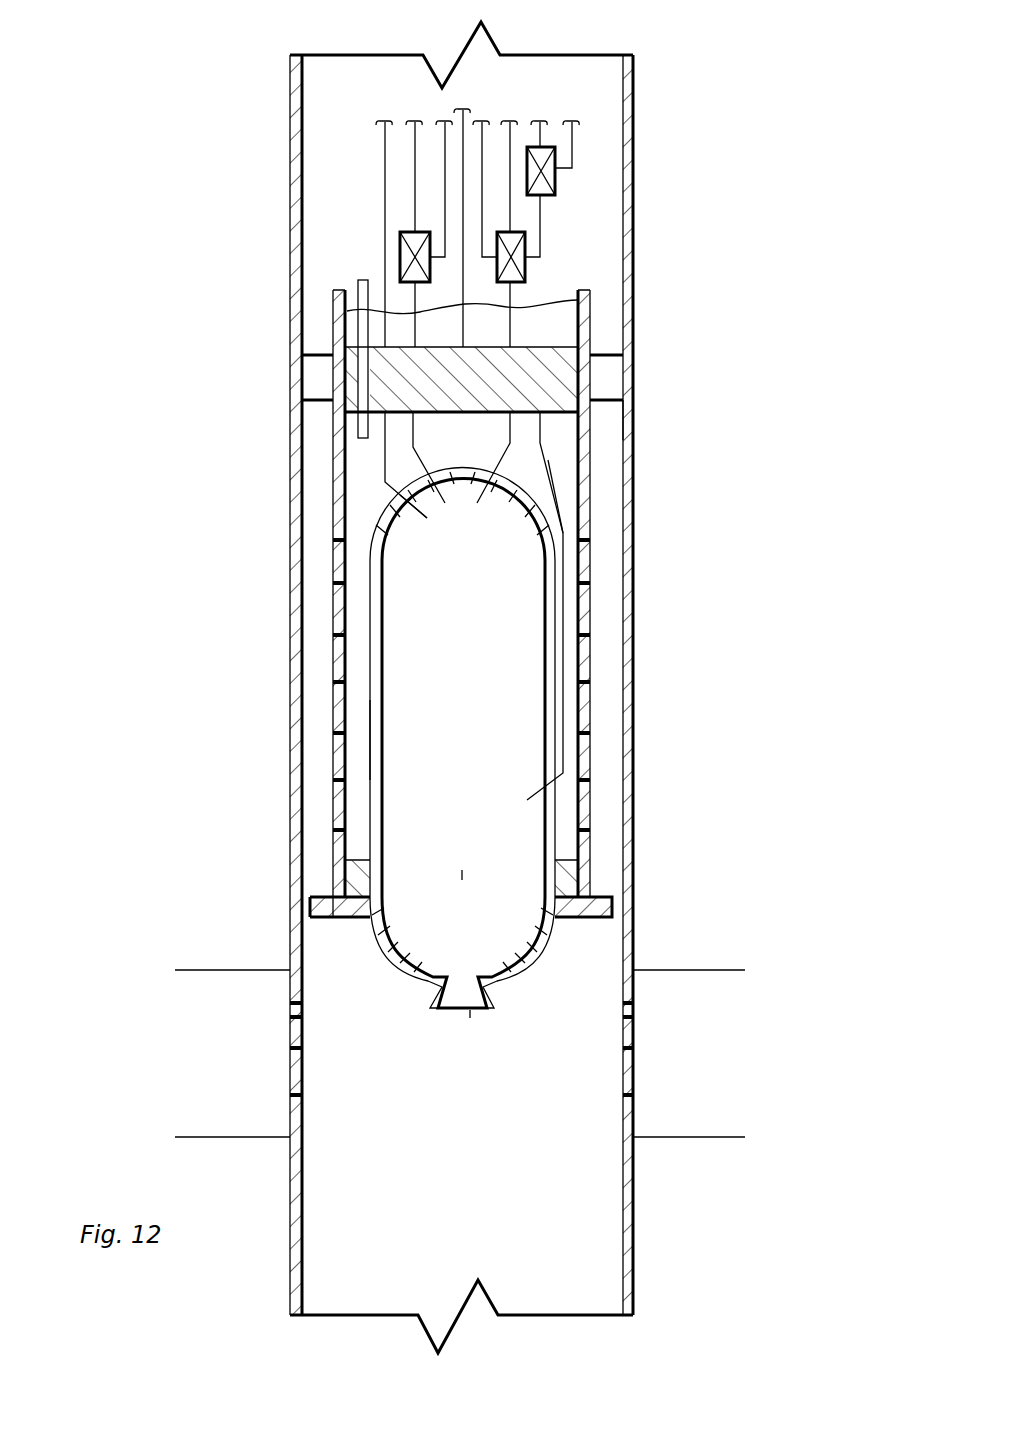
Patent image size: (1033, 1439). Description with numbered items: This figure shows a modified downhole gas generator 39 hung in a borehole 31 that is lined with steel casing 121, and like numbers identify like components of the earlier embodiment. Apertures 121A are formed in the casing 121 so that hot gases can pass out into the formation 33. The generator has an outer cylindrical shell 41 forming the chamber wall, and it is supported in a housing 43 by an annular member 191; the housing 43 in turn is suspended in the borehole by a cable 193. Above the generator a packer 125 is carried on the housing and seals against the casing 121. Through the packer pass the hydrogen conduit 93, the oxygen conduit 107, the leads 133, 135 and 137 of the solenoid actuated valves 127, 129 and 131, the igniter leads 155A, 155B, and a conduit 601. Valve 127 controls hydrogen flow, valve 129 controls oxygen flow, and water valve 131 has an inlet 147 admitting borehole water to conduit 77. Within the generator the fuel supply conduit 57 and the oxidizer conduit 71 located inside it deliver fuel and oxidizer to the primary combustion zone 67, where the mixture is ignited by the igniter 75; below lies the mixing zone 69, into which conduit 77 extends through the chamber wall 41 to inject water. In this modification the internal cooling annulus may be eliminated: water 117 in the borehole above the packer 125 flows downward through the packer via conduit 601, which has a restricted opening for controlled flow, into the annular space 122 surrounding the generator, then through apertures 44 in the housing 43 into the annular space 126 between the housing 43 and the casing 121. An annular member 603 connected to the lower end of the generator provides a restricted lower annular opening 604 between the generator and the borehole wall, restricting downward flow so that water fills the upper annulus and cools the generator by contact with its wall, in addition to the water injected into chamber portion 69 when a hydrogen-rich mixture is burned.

The formation 33 is at (716, 1064).
The casing 121 is at (633, 323).
The apertures 121A is at (632, 1050).
The borehole 31 is at (618, 448).
The water in the borehole 117 is at (350, 130).
The hydrogen conduit 93 is at (408, 125).
The leads 133 is at (440, 130).
The cable 193 is at (455, 118).
The leads 135 is at (475, 130).
The oxygen conduit 107 is at (500, 116).
The inlet 147 is at (565, 118).
The leads 137 is at (578, 133).
The water valve 131 is at (555, 188).
The solenoid actuated valve 127 is at (400, 257).
The solenoid actuated valve 129 is at (548, 256).
The conduit 601 is at (358, 310).
The packer 125 is at (320, 369).
The annular space 122 is at (359, 649).
The apertures 44 is at (340, 685).
The annular space 126 is at (318, 803).
The lead 155A is at (377, 443).
The lead 155B is at (551, 473).
The fuel supply conduit 57 is at (410, 465).
The igniter 75 is at (427, 518).
The oxidizer conduit 71 is at (512, 432).
The water conduit 77 is at (558, 495).
The gas generator 39 is at (560, 710).
The primary combustion zone 67 is at (463, 573).
The mixing zone 69 is at (462, 870).
The outer cylindrical shell 41 is at (371, 769).
The housing 43 is at (337, 818).
The annular member 191 is at (340, 893).
The annular member 603 is at (333, 917).
The restricted lower annular opening 604 is at (622, 935).